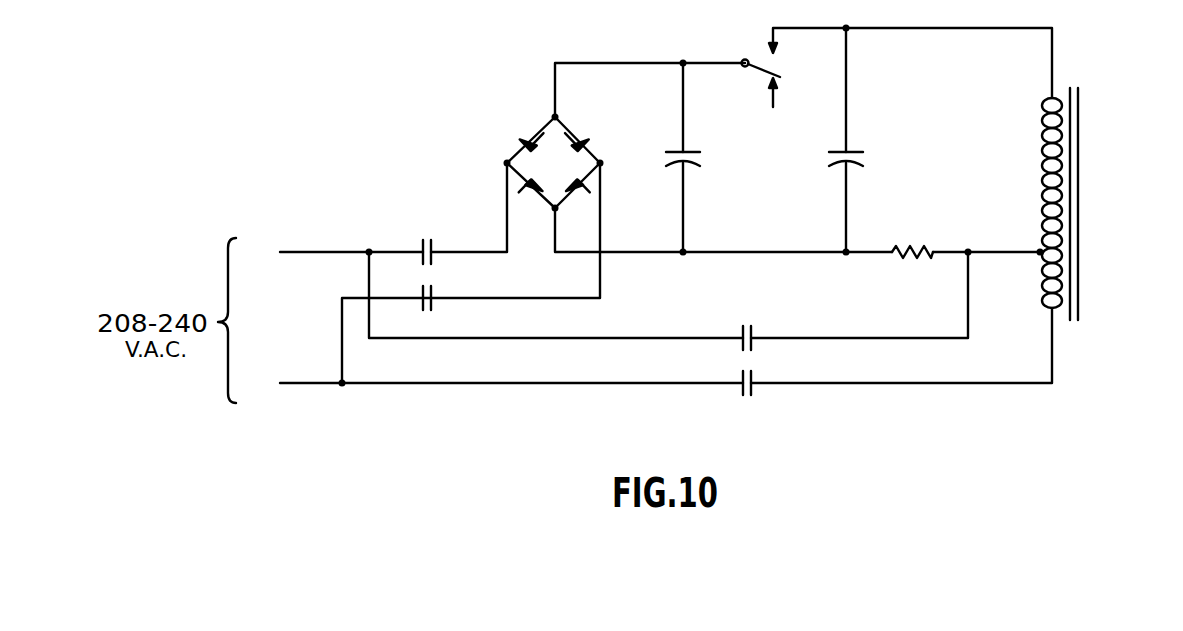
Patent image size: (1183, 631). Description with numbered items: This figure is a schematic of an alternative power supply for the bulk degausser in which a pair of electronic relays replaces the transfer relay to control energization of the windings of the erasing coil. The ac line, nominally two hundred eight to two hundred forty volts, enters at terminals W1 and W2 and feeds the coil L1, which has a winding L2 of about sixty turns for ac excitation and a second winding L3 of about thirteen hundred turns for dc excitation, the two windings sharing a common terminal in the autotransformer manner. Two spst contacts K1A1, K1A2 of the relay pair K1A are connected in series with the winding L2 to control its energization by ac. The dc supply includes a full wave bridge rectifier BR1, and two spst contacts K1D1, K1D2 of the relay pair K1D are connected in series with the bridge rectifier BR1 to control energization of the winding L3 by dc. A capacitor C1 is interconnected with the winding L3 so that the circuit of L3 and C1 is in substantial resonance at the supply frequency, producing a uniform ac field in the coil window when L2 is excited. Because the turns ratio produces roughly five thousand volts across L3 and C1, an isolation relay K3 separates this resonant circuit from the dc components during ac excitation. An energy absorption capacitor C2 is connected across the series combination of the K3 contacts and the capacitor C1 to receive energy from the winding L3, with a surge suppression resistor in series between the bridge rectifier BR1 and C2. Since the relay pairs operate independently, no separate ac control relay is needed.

The AC supply terminal W1 is at (303, 255).
The AC supply terminal W2 is at (289, 387).
The full wave bridge rectifier BR1 is at (517, 153).
The isolation relay K3 is at (756, 88).
The capacitor C1 is at (853, 150).
The energy absorption capacitor C2 is at (695, 160).
The spst contact of relay pair K1D K1D1 is at (435, 262).
The spst contact of relay pair K1D K1D2 is at (435, 305).
The spst contact of relay pair K1A K1A1 is at (754, 345).
The spst contact of relay pair K1A K1A2 is at (754, 392).
The coil L1 is at (1080, 222).
The winding L2 is at (1043, 285).
The second winding L3 is at (1040, 193).